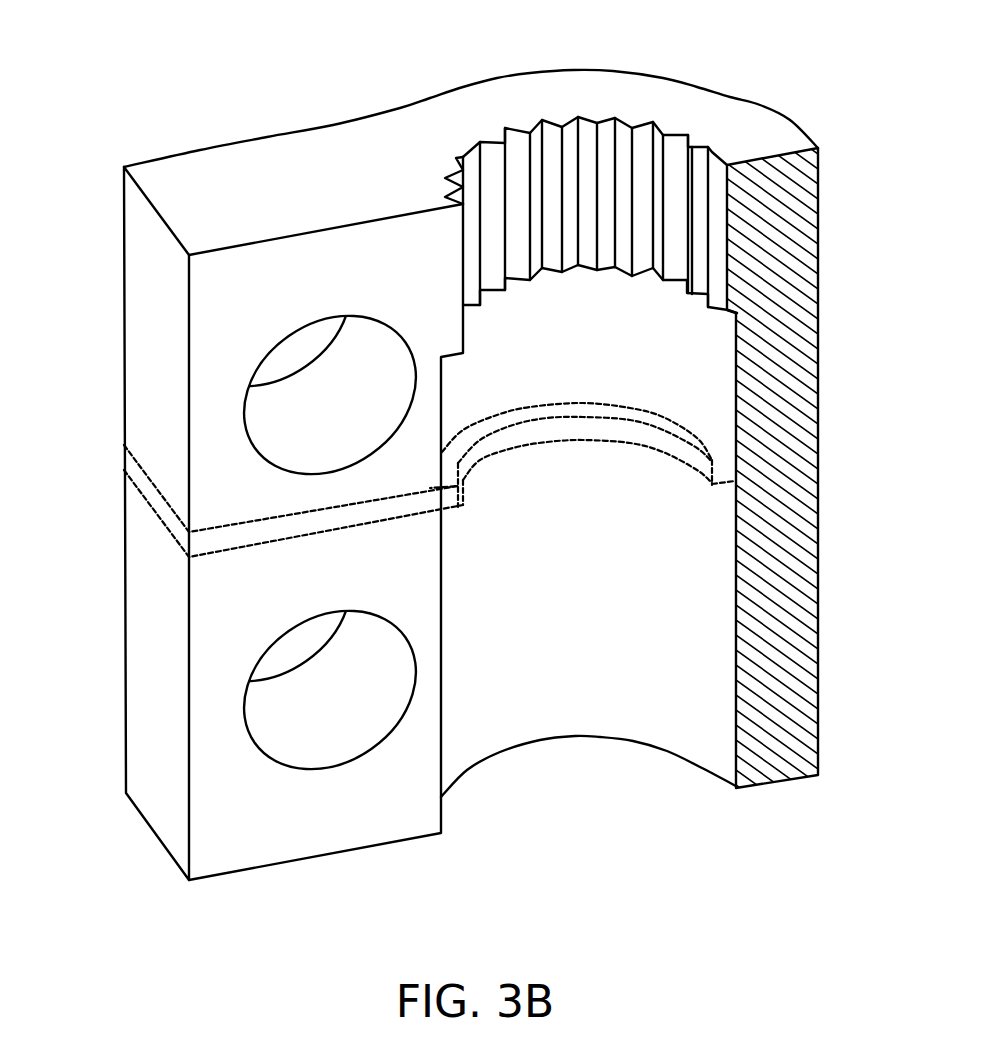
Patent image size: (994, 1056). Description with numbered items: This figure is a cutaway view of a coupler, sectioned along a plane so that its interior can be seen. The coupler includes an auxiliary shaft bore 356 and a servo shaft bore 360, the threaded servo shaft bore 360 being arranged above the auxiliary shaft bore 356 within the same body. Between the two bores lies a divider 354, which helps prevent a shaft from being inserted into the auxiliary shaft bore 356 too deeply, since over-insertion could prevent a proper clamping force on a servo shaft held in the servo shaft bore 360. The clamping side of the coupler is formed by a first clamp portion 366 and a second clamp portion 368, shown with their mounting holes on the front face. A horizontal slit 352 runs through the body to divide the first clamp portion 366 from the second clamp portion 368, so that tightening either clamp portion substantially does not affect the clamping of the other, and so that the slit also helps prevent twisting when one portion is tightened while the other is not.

The horizontal slit 352 is at (125, 460).
The divider 354 is at (718, 458).
The auxiliary shaft bore 356 is at (692, 727).
The servo shaft bore 360 is at (603, 135).
The first clamp portion 366 is at (213, 708).
The second clamp portion 368 is at (198, 314).